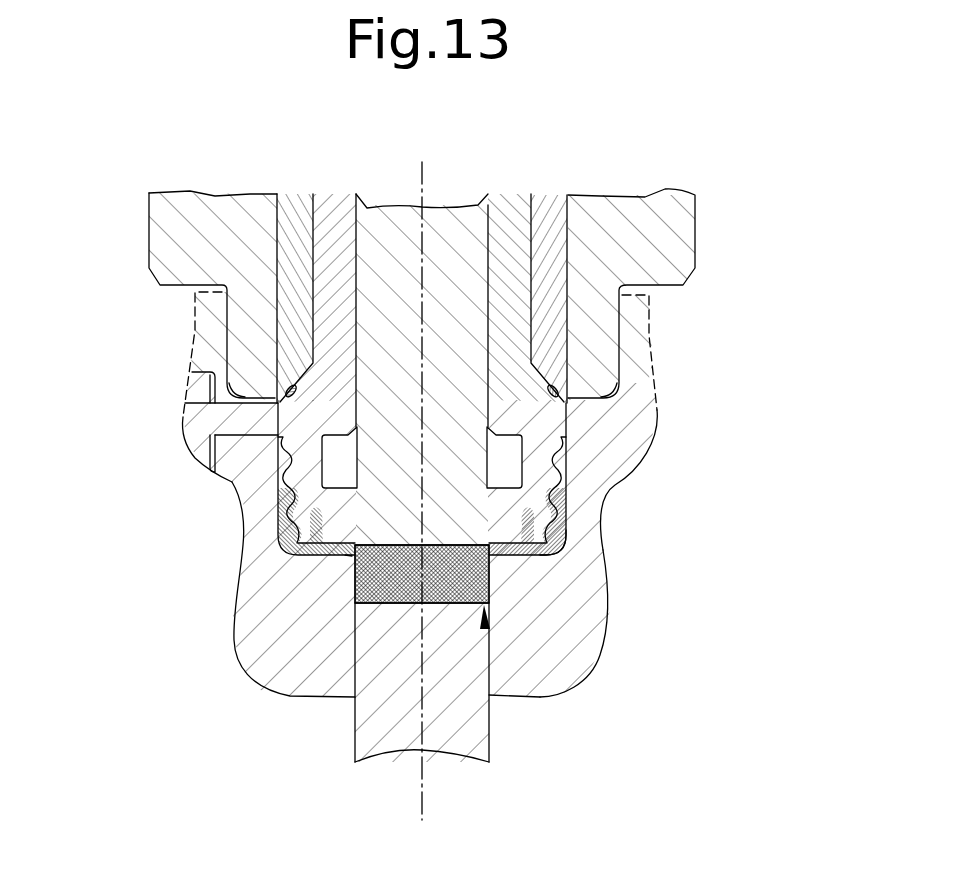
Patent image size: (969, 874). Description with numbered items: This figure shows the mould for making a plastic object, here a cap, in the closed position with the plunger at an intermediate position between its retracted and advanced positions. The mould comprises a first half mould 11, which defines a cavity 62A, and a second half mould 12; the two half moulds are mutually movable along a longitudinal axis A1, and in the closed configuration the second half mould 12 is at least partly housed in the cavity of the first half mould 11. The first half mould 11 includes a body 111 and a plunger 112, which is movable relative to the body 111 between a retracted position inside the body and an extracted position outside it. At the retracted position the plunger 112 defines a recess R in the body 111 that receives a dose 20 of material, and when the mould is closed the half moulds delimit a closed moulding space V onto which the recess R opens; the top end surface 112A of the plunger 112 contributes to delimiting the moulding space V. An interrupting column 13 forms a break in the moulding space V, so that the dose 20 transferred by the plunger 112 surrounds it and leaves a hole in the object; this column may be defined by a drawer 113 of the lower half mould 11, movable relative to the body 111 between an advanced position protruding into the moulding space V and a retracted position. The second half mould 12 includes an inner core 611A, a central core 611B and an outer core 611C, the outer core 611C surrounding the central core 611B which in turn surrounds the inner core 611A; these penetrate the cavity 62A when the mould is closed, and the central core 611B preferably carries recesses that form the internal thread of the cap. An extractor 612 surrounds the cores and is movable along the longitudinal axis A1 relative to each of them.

The second half mould 12 is at (712, 201).
The extractor 612 is at (665, 225).
The inner core 611A is at (381, 215).
The central core 611B is at (508, 218).
The outer core 611C is at (550, 210).
The first half mould 11 is at (618, 537).
The body 111 is at (580, 597).
The plunger 112 is at (448, 723).
The top end surface 112A is at (490, 632).
The drawer 113 is at (188, 432).
The interrupting column 13 is at (270, 440).
The dose 20 is at (392, 645).
The cavity 62A is at (512, 557).
The recess R is at (488, 630).
The closed moulding space V is at (352, 556).
The longitudinal axis A1 is at (422, 820).